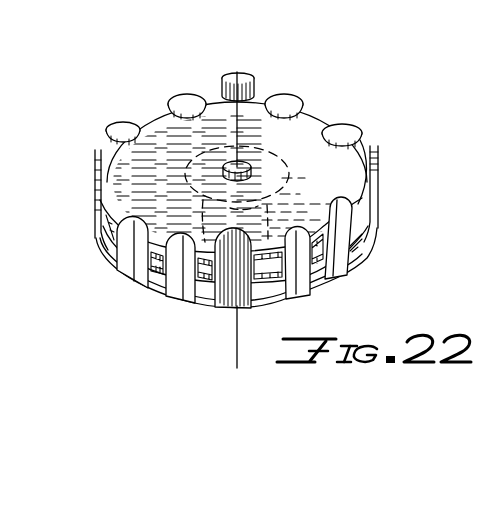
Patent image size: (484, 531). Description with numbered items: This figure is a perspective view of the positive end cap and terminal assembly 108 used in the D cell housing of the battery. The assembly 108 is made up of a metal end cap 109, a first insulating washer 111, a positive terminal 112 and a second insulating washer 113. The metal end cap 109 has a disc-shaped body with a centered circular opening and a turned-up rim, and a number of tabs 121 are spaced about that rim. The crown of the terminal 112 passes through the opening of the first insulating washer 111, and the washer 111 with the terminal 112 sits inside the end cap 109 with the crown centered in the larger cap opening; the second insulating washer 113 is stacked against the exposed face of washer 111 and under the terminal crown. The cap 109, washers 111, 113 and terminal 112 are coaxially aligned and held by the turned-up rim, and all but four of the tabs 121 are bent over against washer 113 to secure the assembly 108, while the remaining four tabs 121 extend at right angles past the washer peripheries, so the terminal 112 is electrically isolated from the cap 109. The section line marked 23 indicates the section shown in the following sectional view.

The positive end cap and terminal assembly 108 is at (126, 62).
The metal end cap 109 is at (229, 231).
The first insulating washer 111 is at (284, 280).
The positive terminal 112 is at (207, 223).
The second insulating washer 113 is at (310, 123).
The tabs 121 is at (178, 102).
The section line 23- 23 is at (257, 115).